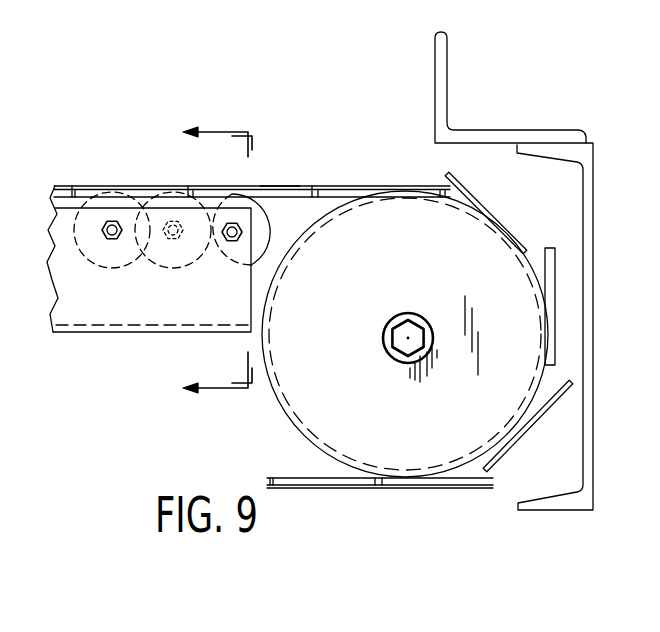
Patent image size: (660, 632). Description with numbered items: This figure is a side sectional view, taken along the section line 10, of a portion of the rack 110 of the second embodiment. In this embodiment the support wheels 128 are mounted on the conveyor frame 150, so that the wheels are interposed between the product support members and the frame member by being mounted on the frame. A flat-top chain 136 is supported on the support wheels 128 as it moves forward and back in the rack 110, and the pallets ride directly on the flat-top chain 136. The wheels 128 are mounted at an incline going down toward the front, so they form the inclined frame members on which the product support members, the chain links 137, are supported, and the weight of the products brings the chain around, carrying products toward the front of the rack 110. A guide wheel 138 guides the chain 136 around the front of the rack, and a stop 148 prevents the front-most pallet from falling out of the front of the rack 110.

The section line 10- 10 is at (217, 263).
The rack 110 is at (563, 97).
The support wheels 128 is at (265, 225).
The flat-top chain 136 is at (137, 183).
The chain links 137 is at (270, 184).
The left guide wheel 138 is at (432, 263).
The stop 148 is at (442, 63).
The conveyor frame 150 is at (132, 306).